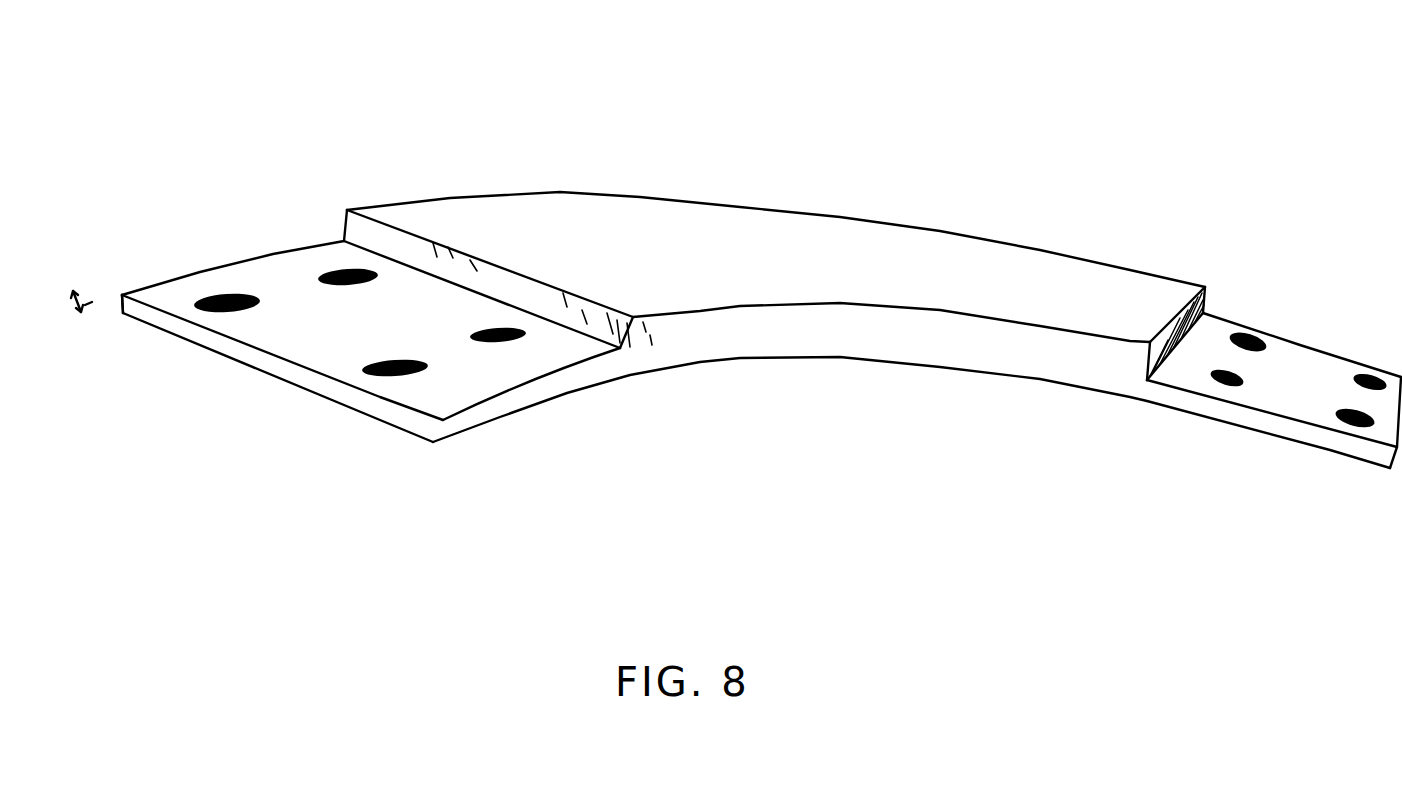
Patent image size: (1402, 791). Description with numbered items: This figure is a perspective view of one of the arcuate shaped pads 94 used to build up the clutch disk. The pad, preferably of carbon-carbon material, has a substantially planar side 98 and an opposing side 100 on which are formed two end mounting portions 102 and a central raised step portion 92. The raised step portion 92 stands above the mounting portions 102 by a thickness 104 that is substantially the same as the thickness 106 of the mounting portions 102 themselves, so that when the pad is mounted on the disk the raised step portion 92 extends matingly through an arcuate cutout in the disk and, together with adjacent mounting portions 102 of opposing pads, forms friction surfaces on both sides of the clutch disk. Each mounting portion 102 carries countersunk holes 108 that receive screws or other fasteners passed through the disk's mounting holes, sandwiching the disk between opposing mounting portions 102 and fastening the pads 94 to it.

The raised step portion 92 is at (1082, 348).
The arcuate shaped pad 94 is at (807, 200).
The substantially planar side 98 is at (720, 363).
The opposing side 100 is at (1028, 236).
The mounting portion 102 is at (272, 272).
The thickness of the raised step portion 104 is at (312, 243).
The thickness of the mounting portions 106 is at (113, 295).
The countersunk hole 108 is at (403, 377).